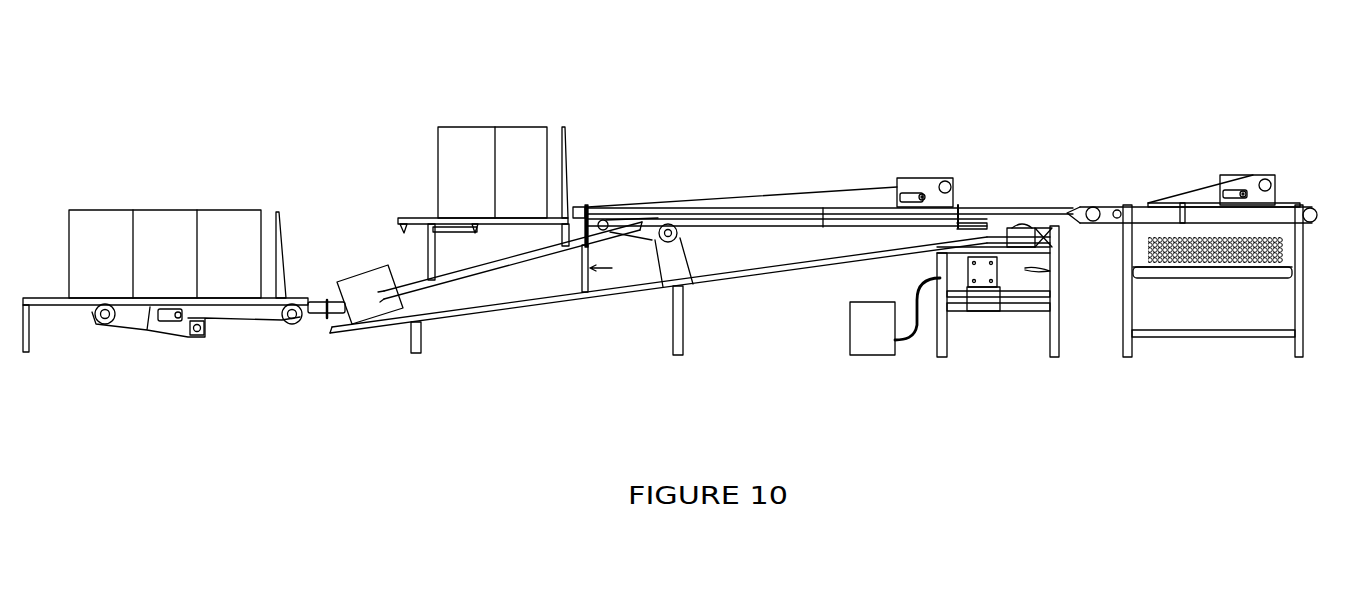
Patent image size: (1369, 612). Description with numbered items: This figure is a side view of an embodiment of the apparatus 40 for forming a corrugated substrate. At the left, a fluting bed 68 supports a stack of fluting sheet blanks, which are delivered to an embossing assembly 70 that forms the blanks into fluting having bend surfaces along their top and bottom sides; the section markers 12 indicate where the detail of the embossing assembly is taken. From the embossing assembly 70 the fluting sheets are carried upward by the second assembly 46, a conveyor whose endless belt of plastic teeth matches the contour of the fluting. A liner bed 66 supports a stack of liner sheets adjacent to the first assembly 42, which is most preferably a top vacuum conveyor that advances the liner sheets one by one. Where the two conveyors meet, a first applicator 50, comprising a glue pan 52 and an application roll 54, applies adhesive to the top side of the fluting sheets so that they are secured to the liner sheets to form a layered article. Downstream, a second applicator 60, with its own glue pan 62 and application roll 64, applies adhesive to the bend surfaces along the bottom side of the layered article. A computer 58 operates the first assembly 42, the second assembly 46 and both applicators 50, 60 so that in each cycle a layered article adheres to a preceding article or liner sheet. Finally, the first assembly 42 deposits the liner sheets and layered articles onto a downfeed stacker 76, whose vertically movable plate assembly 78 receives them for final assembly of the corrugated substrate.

The section line 12- 12 is at (398, 123).
The apparatus 40 is at (776, 59).
The first assembly 42 is at (692, 202).
The second assembly 46 is at (490, 276).
The first applicator 50 is at (613, 222).
The glue pan 52 is at (600, 220).
The application roll 54 is at (607, 222).
The computer 58 is at (877, 356).
The second applicator 60 is at (1052, 250).
The glue pan 62 is at (1010, 233).
The application roll 64 is at (1027, 228).
The liner bed 66 is at (457, 127).
The fluting bed 68 is at (170, 209).
The embossing assembly 70 is at (360, 308).
The downfeed stacker 76 is at (1305, 258).
The vertically movable plate assembly 78 is at (1237, 268).